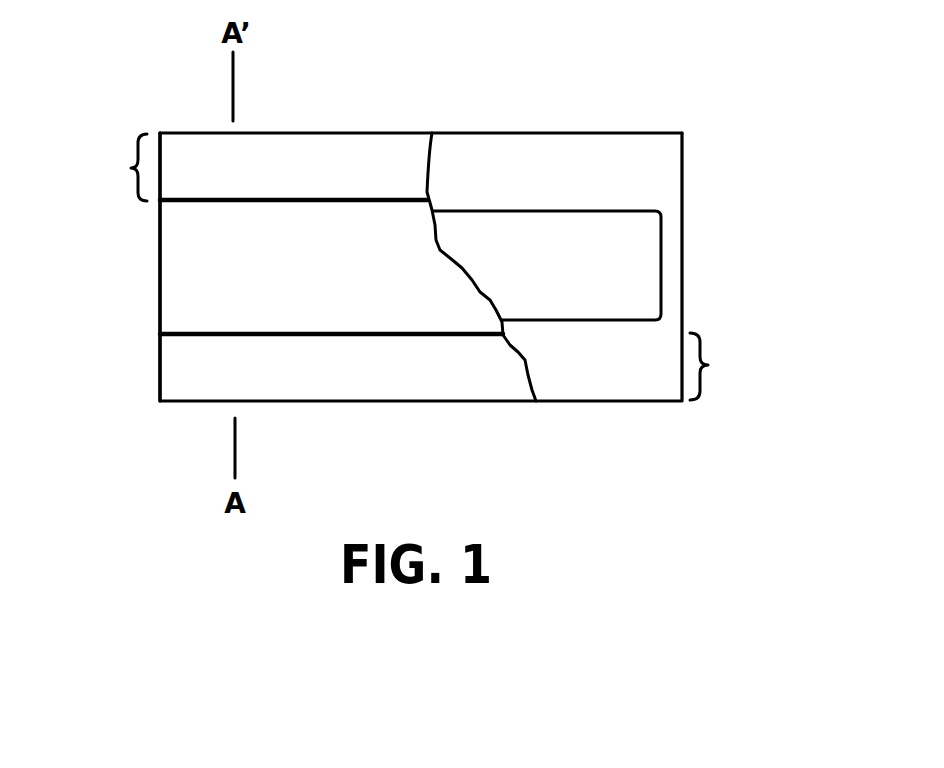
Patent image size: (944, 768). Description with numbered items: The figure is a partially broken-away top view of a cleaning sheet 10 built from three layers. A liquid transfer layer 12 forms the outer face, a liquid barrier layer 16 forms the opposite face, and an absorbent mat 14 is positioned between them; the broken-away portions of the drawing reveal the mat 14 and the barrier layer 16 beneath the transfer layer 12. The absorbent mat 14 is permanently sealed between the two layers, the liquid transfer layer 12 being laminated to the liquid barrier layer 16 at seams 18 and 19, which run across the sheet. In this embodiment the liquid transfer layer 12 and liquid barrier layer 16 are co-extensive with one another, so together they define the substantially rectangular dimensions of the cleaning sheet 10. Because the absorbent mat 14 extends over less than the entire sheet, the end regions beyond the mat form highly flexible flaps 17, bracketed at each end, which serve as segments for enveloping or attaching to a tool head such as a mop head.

The cleaning sheet 10 is at (764, 257).
The liquid transfer layer 12 is at (306, 153).
The absorbent mat 14 is at (551, 277).
The liquid barrier layer 16 is at (587, 164).
The flaps 17 is at (121, 168).
The seam 18 is at (368, 198).
The seam 19 is at (160, 310).